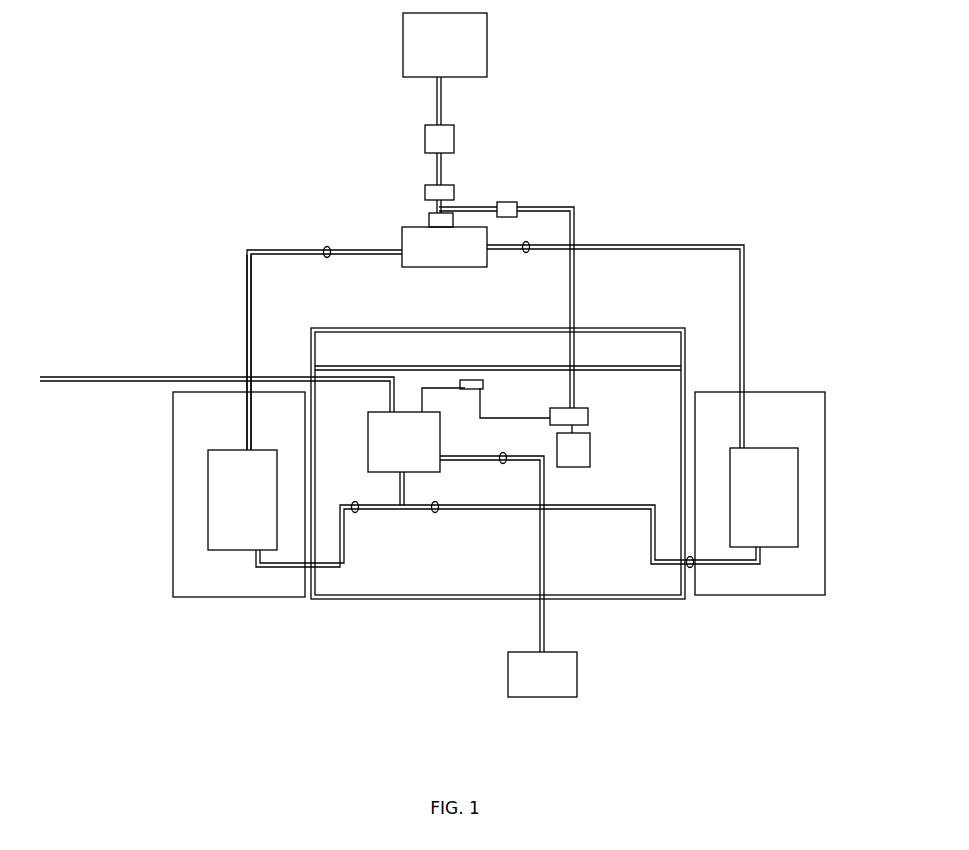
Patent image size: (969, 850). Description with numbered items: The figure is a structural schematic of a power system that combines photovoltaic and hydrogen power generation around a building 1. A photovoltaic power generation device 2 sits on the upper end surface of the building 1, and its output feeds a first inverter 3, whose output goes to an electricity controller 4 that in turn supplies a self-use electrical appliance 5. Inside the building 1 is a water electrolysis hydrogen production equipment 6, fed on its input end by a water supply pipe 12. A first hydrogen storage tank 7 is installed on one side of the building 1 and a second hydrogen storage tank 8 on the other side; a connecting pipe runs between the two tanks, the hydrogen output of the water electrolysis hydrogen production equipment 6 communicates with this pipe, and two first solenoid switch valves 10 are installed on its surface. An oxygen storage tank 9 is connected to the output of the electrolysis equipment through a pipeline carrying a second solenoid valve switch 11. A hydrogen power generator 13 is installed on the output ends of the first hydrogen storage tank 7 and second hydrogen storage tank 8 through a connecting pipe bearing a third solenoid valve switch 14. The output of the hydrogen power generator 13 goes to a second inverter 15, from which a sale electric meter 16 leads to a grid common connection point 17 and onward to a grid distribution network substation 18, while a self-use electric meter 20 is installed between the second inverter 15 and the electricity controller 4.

The building 1 is at (683, 405).
The photovoltaic power generation device 2 is at (653, 330).
The first inverter 3 is at (461, 381).
The electricity controller 4 is at (588, 412).
The self-use electrical appliance 5 is at (590, 455).
The water electrolysis hydrogen production equipment 6 is at (368, 432).
The first hydrogen storage tank 7 is at (212, 495).
The second hydrogen storage tank 8 is at (790, 505).
The oxygen storage tank 9 is at (567, 672).
The first solenoid switch valve 10 is at (435, 512).
The second solenoid valve switch 11 is at (503, 463).
The water supply pipe 12 is at (249, 366).
The hydrogen power generator 13 is at (413, 238).
The third solenoid valve switch 14 is at (526, 242).
The second inverter 15 is at (428, 220).
The sale electric meter 16 is at (452, 187).
The grid common connection point 17 is at (448, 138).
The grid distribution network substation 18 is at (478, 62).
The self-use electric meter 20 is at (515, 203).